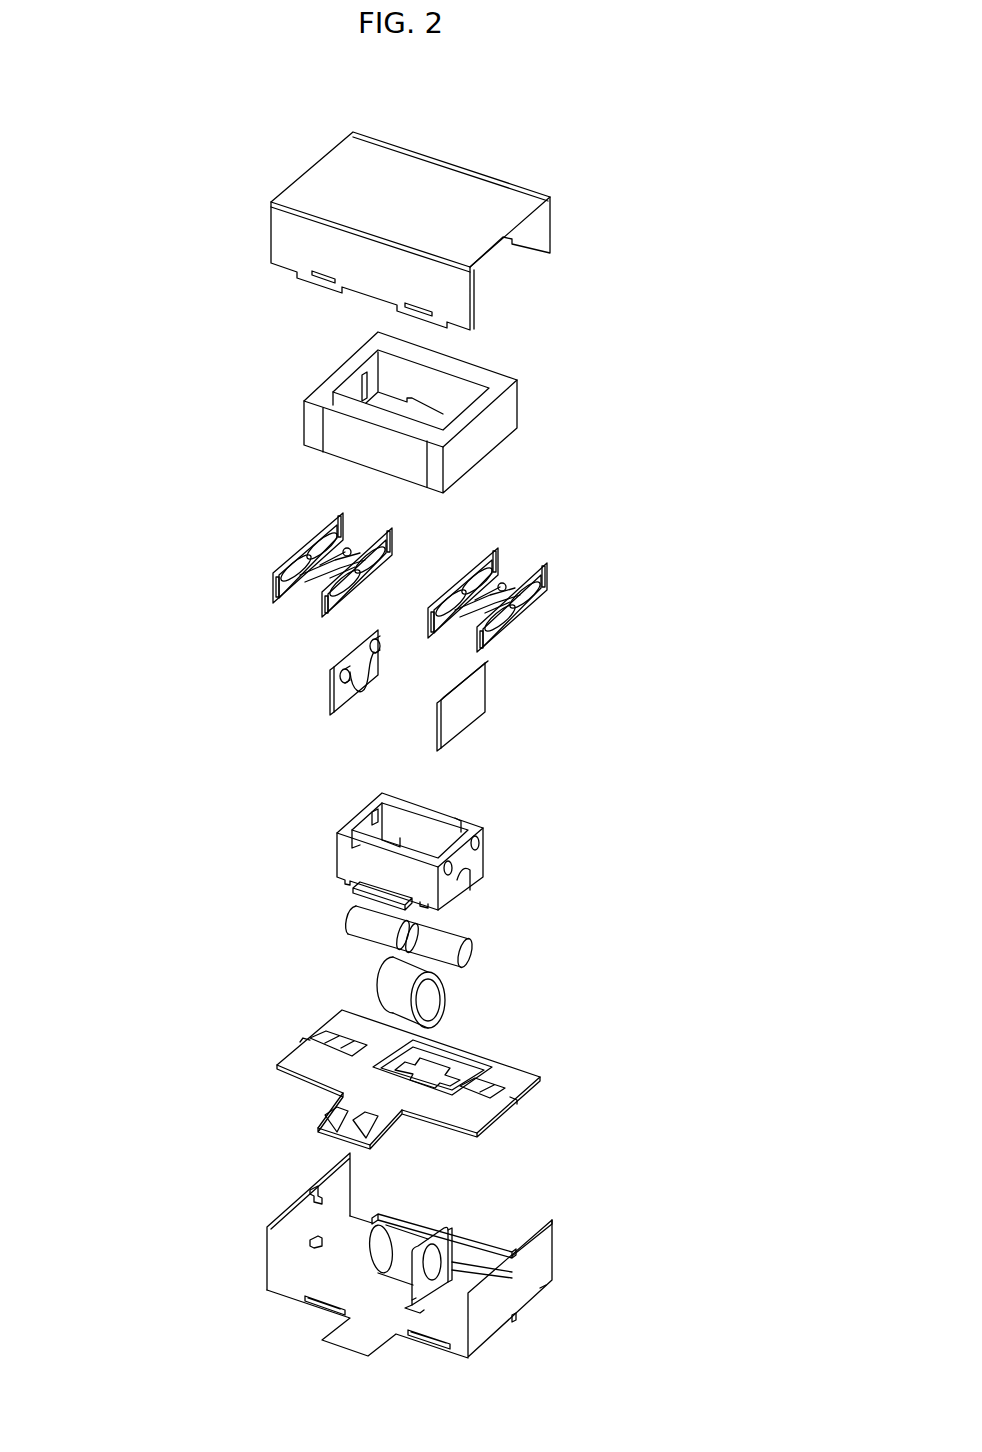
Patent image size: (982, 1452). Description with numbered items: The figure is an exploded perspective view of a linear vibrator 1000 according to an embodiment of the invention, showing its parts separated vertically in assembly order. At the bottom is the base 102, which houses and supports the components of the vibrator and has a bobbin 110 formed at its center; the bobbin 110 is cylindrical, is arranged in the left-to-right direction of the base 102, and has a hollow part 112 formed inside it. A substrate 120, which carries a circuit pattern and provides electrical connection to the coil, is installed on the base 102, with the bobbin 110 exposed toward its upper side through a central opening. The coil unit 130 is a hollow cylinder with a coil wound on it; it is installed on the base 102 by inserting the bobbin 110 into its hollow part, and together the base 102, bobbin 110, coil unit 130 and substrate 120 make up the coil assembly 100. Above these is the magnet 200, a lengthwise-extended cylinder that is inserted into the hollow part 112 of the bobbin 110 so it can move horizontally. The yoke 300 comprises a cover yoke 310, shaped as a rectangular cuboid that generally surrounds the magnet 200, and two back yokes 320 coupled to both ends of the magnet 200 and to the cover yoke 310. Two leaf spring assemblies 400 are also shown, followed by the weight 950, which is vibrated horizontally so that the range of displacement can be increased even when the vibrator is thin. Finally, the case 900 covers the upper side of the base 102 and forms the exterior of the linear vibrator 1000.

The linear vibrator 1000 is at (112, 143).
The case 900 is at (550, 222).
The weight 950 is at (517, 392).
The leaf spring assembly 400 is at (302, 548).
The yoke 300 is at (449, 770).
The back yoke 320 is at (333, 690).
The cover yoke 310 is at (483, 840).
The magnet 200 is at (470, 938).
The coil assembly 100 is at (508, 1157).
The coil unit 130 is at (446, 990).
The substrate 120 is at (540, 1080).
The bobbin 110 is at (415, 1225).
The hollow part 112 is at (544, 1228).
The base 102 is at (548, 1240).